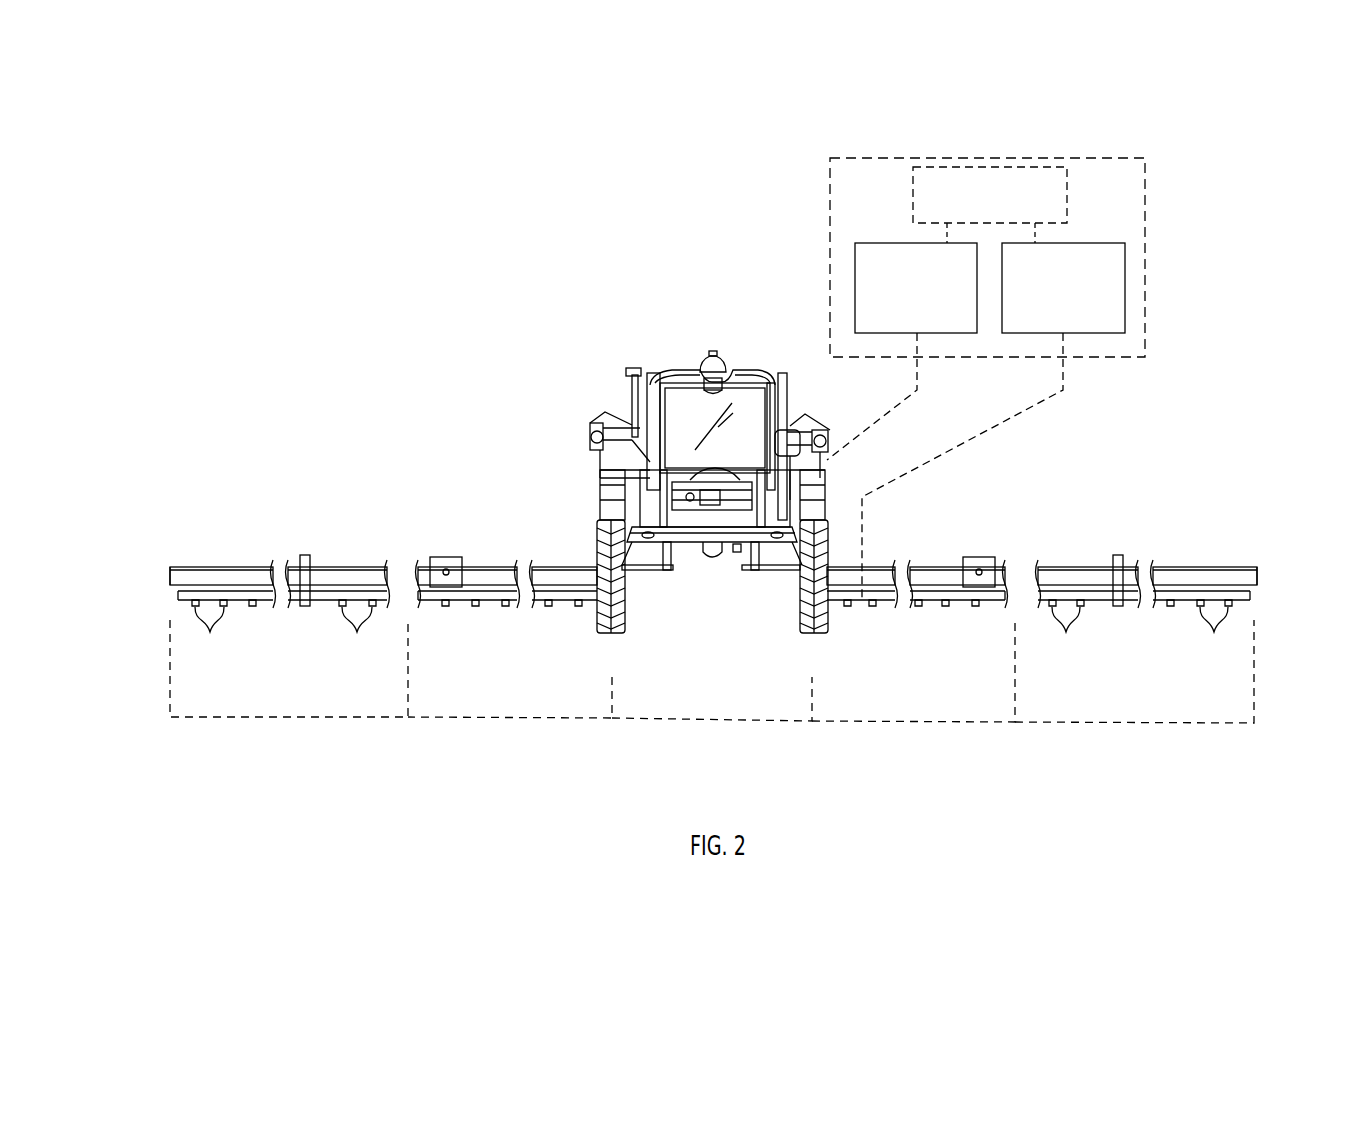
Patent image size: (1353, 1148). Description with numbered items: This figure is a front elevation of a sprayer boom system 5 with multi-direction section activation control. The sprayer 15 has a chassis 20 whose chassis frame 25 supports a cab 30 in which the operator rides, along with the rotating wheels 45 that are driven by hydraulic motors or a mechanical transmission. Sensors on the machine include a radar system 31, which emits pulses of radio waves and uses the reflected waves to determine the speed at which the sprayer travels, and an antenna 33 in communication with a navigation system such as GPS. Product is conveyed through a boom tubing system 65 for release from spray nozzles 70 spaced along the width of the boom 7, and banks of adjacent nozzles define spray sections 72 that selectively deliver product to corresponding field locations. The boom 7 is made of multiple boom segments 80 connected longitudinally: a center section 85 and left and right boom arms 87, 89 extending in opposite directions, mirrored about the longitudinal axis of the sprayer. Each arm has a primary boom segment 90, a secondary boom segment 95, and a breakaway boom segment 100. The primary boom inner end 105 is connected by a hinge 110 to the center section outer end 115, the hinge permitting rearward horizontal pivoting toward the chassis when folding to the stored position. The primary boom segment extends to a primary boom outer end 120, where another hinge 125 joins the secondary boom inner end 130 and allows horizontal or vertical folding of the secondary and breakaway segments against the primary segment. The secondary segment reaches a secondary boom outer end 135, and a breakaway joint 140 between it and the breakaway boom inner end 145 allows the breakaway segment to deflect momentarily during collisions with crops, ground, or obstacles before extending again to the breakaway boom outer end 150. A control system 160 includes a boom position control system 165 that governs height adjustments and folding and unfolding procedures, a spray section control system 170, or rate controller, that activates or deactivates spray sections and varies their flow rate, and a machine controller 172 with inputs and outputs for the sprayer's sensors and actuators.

The agricultural sprayer 5 is at (1145, 434).
The boom 7 is at (930, 563).
The sprayer 15 is at (690, 238).
The chassis 20 is at (760, 570).
The chassis frame 25 is at (727, 520).
The cab 30 is at (660, 362).
The radar system 31 is at (722, 590).
The antenna 33 is at (716, 352).
The wheels 45 is at (618, 640).
The boom tubing system 65 is at (885, 608).
The spray nozzles 70 is at (953, 676).
The spray sections 72 is at (240, 690).
The boom segments 80 is at (212, 536).
The center section 85 is at (720, 615).
The left boom arm 87 is at (1190, 462).
The right boom arm 89 is at (445, 447).
The primary boom segment 90 is at (553, 522).
The secondary boom segment 95 is at (352, 524).
The breakaway boom segment 100 is at (233, 552).
The primary boom inner end 105 is at (565, 605).
The hinge 110 is at (598, 605).
The center section outer end 115 is at (640, 580).
The primary boom outer end 120 is at (489, 580).
The hinge 125 is at (450, 582).
The secondary boom inner end 130 is at (413, 575).
The secondary boom outer end 135 is at (320, 570).
The breakaway joint 140 is at (308, 610).
The breakaway boom inner end 145 is at (282, 568).
The breakaway boom outer end 150 is at (175, 567).
The control system 160 is at (1066, 158).
The boom position control system 165 is at (855, 291).
The spray section control system 170 is at (1125, 293).
The machine controller 172 is at (992, 162).